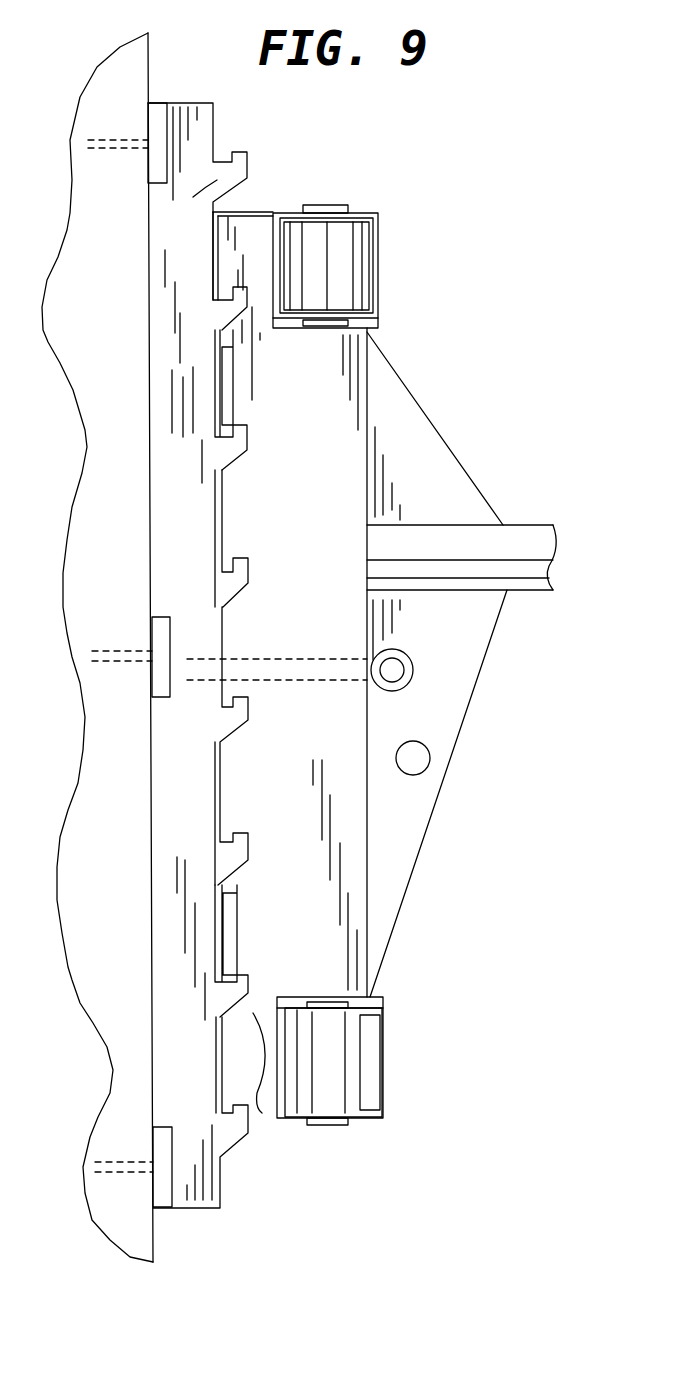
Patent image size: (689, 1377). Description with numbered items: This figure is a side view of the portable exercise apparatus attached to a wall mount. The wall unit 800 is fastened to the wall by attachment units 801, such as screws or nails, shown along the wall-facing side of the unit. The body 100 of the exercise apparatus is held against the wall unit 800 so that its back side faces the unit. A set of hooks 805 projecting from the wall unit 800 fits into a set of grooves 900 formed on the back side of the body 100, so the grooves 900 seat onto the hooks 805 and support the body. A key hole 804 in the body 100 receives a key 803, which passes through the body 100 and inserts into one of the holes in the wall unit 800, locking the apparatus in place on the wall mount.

The body 100 is at (352, 937).
The wall unit 800 is at (202, 297).
The attachment units 801 is at (120, 167).
The key 803 is at (300, 673).
The key hole 804 is at (378, 683).
The hooks 805 is at (205, 570).
The grooves 900 is at (243, 317).